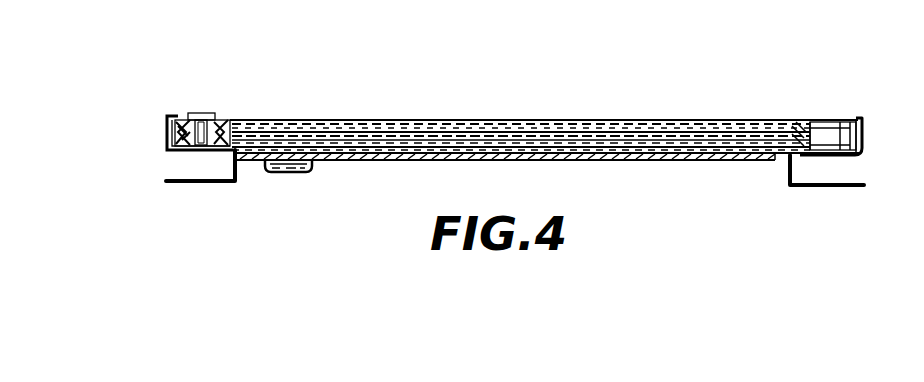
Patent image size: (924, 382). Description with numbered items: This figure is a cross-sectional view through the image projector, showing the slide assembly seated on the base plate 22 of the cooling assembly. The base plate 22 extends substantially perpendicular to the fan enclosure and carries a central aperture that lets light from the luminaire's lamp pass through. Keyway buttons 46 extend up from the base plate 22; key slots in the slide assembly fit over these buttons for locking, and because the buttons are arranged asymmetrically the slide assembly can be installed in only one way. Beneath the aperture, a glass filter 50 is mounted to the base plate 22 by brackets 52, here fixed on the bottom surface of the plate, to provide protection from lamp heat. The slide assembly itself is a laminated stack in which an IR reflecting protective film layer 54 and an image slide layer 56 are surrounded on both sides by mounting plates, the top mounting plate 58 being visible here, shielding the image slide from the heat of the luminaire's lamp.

The keyway button 46 is at (205, 116).
The top mounting plate 58 is at (275, 120).
The image slide layer 56 is at (405, 120).
The IR reflecting protective film layer 54 is at (390, 130).
The bracket 52 is at (280, 174).
The glass filter 50 is at (702, 161).
The base plate 22 is at (783, 157).